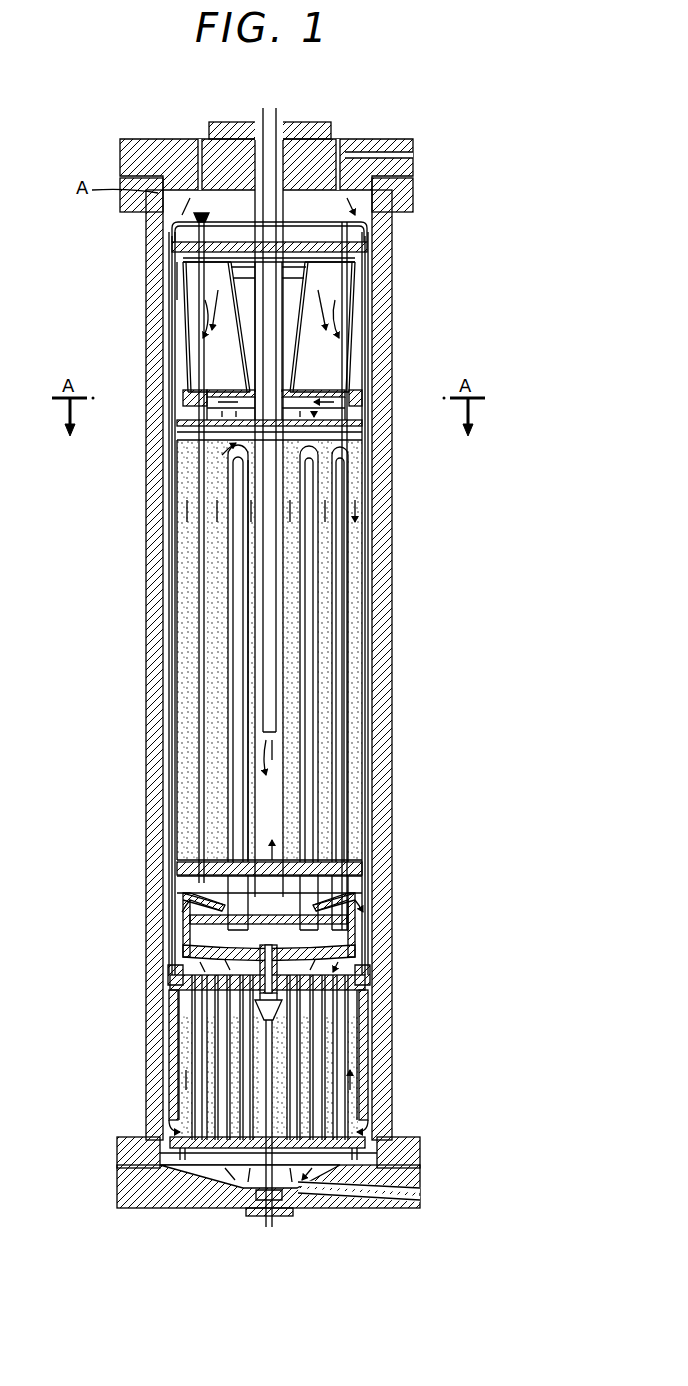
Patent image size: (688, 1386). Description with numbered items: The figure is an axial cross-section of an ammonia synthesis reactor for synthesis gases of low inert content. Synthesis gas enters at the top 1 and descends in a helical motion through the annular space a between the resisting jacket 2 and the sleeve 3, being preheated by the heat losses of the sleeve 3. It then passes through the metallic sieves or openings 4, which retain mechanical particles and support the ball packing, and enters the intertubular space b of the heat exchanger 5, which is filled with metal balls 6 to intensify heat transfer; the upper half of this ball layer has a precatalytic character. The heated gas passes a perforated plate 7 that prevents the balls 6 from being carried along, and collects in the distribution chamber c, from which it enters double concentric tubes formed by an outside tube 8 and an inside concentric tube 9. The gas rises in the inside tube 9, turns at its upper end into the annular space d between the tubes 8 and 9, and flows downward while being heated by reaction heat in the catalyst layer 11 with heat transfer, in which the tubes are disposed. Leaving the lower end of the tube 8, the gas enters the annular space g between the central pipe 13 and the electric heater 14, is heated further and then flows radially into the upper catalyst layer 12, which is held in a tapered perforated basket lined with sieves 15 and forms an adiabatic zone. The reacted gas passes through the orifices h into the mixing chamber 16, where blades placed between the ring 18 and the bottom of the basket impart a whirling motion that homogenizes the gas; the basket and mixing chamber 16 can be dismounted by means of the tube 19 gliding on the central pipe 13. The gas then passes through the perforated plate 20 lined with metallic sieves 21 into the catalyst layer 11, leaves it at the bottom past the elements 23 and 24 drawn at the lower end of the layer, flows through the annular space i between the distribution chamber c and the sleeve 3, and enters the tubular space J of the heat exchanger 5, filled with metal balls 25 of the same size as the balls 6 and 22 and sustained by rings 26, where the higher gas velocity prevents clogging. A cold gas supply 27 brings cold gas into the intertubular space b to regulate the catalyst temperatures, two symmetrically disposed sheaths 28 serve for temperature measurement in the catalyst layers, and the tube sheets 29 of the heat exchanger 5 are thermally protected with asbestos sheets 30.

The top 1 is at (133, 140).
The resisting jacket 2 is at (150, 318).
The sleeve 3 is at (172, 503).
The metallic sieves or openings 4 is at (162, 1127).
The heat exchanger 5 is at (190, 1062).
The metal balls 6 is at (172, 1050).
The perforated plate 7 is at (185, 997).
The outside tube 8 is at (215, 880).
The inside concentric tube 9 is at (193, 917).
The catalyst layer with heat transfer 11 is at (185, 570).
The catalyst layer 12 is at (172, 306).
The central pipe 13 is at (260, 633).
The electric heater 14 is at (215, 603).
The sieves lining the catalyst basket 15 is at (238, 300).
The mixing chamber 16 is at (212, 424).
The ring 18 is at (208, 391).
The tube 19 is at (255, 342).
The perforated plate 20 is at (212, 462).
The metallic sieves 21 is at (212, 437).
The metal balls 22 is at (190, 855).
The lower grid 23 is at (200, 862).
The support ring 24 is at (172, 863).
The metal balls 25 is at (200, 1080).
The rings 26 is at (150, 1162).
The cold gas supply 27 is at (267, 1222).
The sheaths 28 is at (196, 246).
The tube sheets 29 is at (172, 977).
The asbestos sheets 30 is at (172, 988).
The annular space a is at (172, 360).
The intertubular space b is at (197, 1027).
The distribution chamber c is at (197, 933).
The annular space d is at (230, 694).
The annular space g is at (267, 664).
The orifices h is at (210, 413).
The annular space i is at (183, 920).
The tubular space J is at (190, 1010).